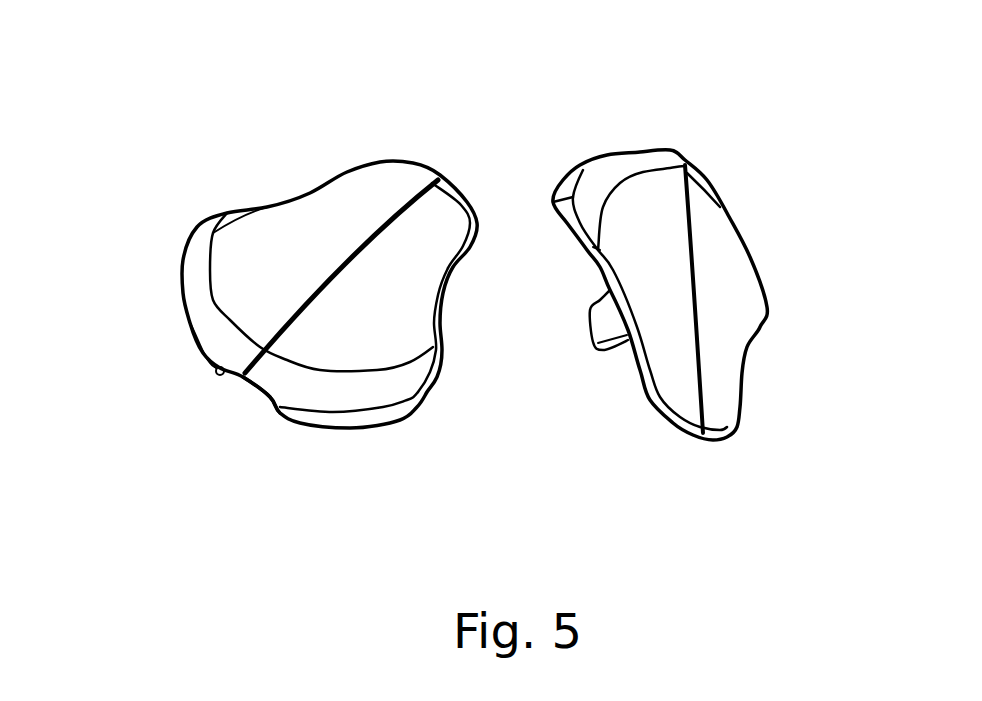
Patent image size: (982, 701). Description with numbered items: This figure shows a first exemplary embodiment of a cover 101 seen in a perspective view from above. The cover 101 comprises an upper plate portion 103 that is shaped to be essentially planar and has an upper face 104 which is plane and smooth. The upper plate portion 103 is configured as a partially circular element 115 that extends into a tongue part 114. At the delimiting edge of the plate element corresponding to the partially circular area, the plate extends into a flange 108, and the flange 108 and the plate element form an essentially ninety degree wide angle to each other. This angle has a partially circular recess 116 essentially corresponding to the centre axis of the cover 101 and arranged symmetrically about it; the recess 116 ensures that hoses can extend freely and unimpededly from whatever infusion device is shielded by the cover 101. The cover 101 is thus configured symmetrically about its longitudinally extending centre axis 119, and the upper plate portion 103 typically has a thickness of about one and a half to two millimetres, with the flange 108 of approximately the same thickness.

The cover 101 is at (325, 143).
The upper plate portion 103 is at (247, 238).
The upper face 104 is at (413, 307).
The flange 108 is at (357, 413).
The tongue part 114 is at (433, 215).
The partially circular element 115 is at (240, 287).
The partially circular recess 116 is at (250, 402).
The centre axis 119 is at (397, 208).